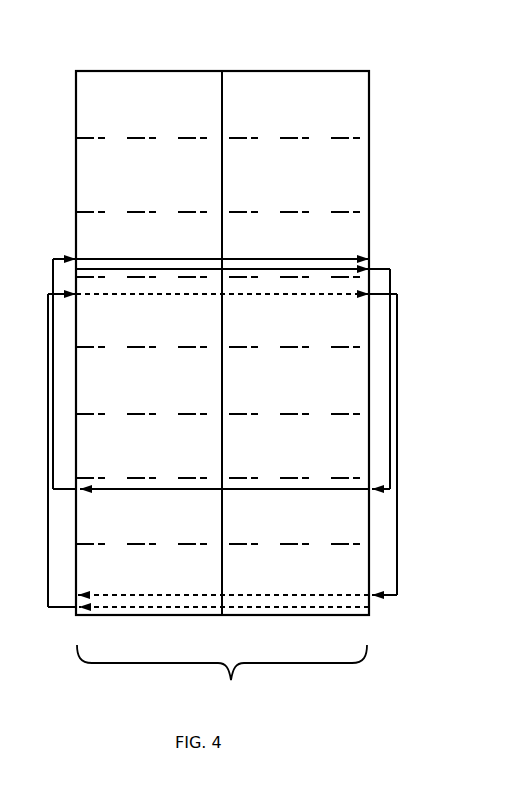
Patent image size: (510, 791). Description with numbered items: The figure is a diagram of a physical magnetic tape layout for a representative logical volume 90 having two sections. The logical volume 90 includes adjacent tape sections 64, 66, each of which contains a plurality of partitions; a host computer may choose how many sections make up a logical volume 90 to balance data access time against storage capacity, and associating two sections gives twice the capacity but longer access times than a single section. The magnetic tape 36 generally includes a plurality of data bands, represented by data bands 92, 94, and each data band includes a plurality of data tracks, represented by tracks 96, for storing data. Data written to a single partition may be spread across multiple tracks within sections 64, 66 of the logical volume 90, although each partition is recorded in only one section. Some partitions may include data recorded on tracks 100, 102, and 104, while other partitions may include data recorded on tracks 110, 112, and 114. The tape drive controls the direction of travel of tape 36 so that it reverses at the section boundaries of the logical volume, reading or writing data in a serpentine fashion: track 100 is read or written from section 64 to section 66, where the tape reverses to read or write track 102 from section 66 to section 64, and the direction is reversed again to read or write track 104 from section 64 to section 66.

The magnetic tape 36 is at (382, 50).
The tape section 64 is at (144, 73).
The tape section 66 is at (294, 73).
The data band 92 is at (80, 109).
The data band 94 is at (80, 174).
The tracks 96 is at (118, 242).
The track 100 is at (292, 269).
The track 102 is at (290, 488).
The track 104 is at (338, 259).
The track 110 is at (288, 610).
The track 112 is at (302, 298).
The track 114 is at (292, 594).
The logical volume 90 is at (222, 674).